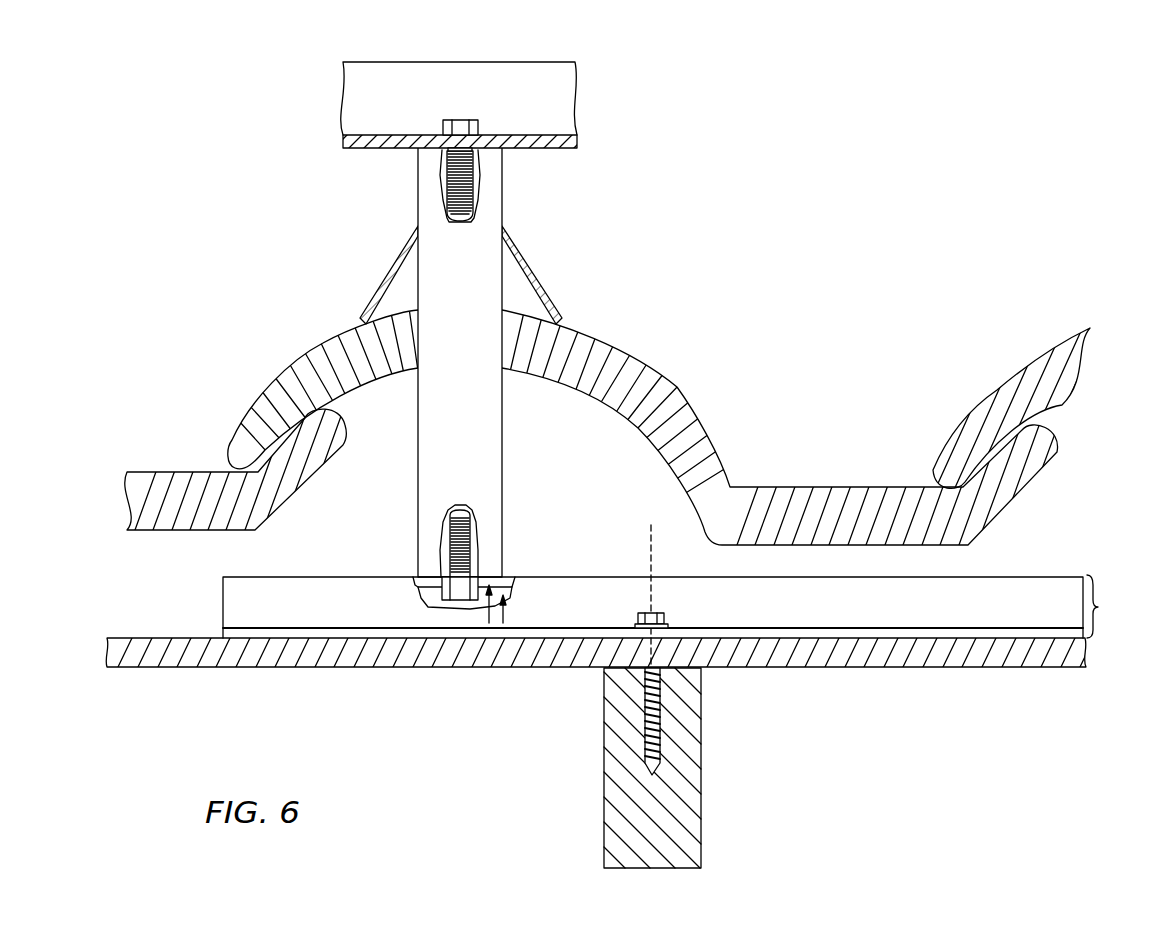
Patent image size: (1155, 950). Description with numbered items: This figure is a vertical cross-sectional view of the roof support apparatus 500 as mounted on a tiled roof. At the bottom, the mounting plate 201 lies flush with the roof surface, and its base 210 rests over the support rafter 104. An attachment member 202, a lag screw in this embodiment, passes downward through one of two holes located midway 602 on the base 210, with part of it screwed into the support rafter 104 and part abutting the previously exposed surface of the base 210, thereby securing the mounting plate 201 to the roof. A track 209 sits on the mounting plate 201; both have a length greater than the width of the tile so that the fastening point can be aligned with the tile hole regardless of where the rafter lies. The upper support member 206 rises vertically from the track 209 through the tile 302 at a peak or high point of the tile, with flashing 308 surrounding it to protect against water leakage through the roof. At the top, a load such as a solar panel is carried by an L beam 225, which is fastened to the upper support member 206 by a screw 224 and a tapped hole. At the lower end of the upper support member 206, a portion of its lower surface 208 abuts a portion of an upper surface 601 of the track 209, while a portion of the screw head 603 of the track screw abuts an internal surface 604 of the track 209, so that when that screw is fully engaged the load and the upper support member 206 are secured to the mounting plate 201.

The roof support apparatus 500 is at (828, 197).
The screw 224 is at (494, 122).
The L beam 225 is at (504, 93).
The flashing 308 is at (465, 267).
The tile 302 is at (671, 422).
The upper support member 206 is at (499, 362).
The upper surface of track 601 is at (328, 572).
The screw head 603 is at (447, 570).
The holes located midway 602 is at (624, 593).
The track 209 is at (614, 599).
The mounting plate 201 is at (1111, 606).
The base 210 is at (600, 668).
The lower surface 208 is at (653, 661).
The internal surface of track 604 is at (533, 604).
The attachment member 202 is at (660, 700).
The support rafter 104 is at (610, 768).